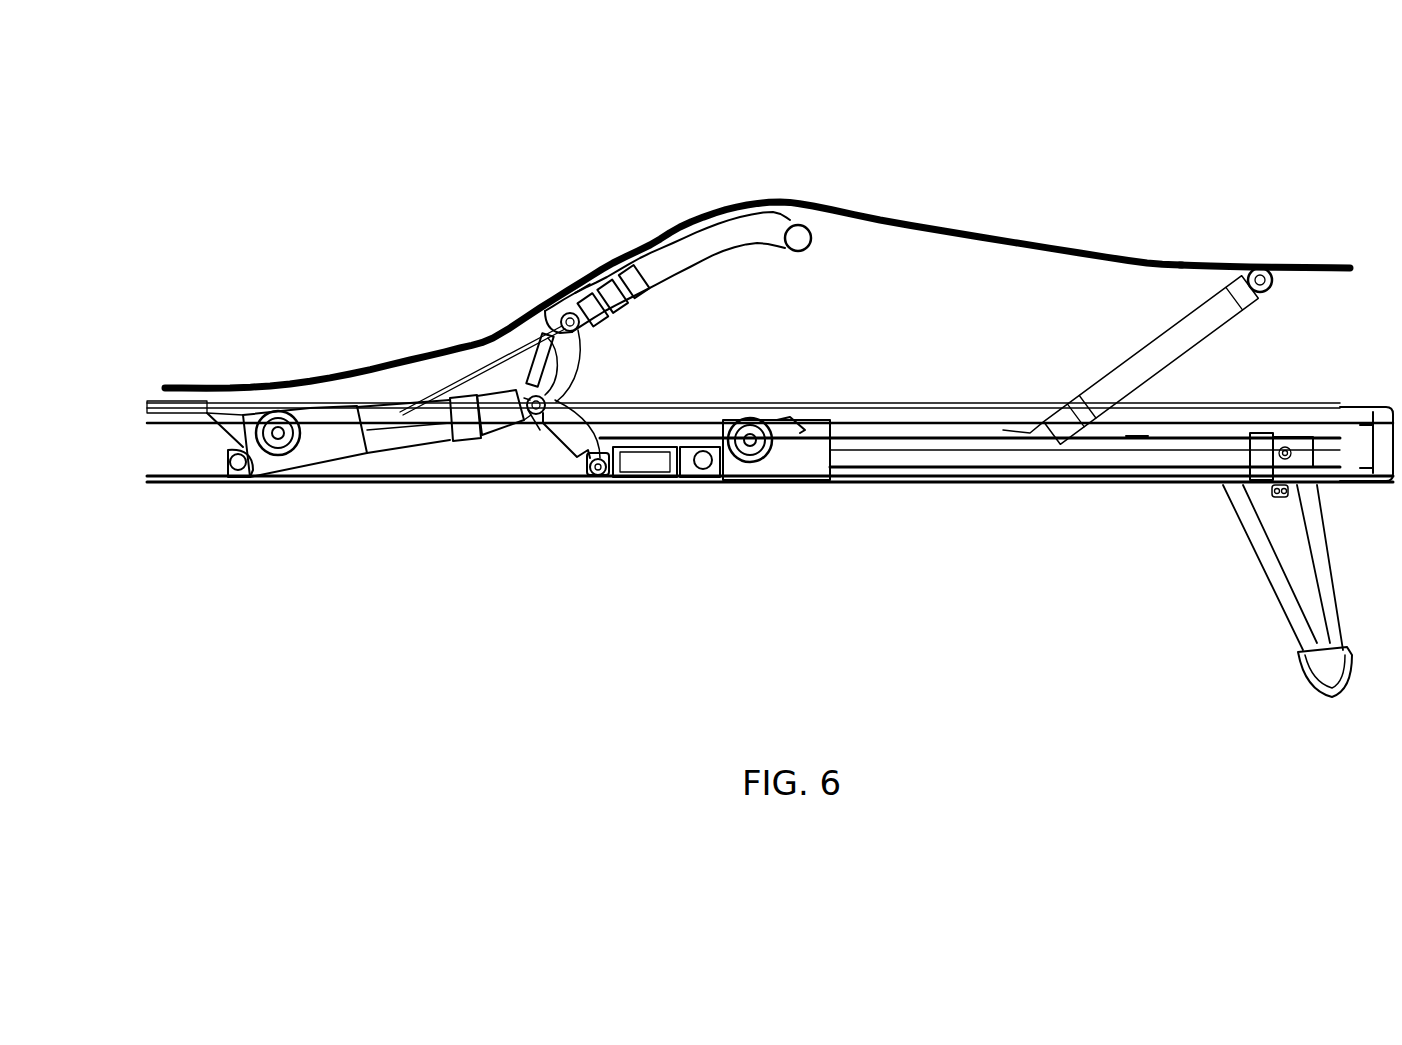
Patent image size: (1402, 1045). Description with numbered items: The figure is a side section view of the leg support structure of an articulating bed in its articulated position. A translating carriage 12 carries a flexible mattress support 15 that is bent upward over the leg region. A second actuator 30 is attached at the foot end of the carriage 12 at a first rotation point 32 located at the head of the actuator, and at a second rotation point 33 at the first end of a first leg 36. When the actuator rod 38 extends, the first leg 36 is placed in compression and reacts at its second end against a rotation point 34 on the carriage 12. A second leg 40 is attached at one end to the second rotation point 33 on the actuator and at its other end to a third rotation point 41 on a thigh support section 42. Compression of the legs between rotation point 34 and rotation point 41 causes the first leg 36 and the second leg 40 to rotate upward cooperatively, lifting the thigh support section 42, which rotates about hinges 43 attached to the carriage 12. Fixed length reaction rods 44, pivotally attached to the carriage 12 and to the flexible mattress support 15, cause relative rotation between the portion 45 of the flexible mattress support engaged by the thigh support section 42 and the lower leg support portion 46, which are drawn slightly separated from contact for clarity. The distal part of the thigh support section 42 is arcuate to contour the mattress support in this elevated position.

The translating carriage 12 is at (197, 468).
The flexible mattress support 15 is at (788, 200).
The second actuator 30 is at (353, 440).
The first rotation point 32 is at (242, 468).
The second rotation point 33 is at (546, 402).
The rotation point 34 is at (598, 476).
The first leg 36 is at (572, 428).
The actuator rod 38 is at (493, 412).
The second leg 40 is at (553, 368).
The third rotation point 41 is at (578, 332).
The thigh support section 42 is at (682, 260).
The hinges 43 is at (407, 407).
The fixed length reaction rods 44 is at (1140, 357).
The portion of the flexible mattress support 45 is at (588, 265).
The lower leg support portion 46 is at (1183, 268).